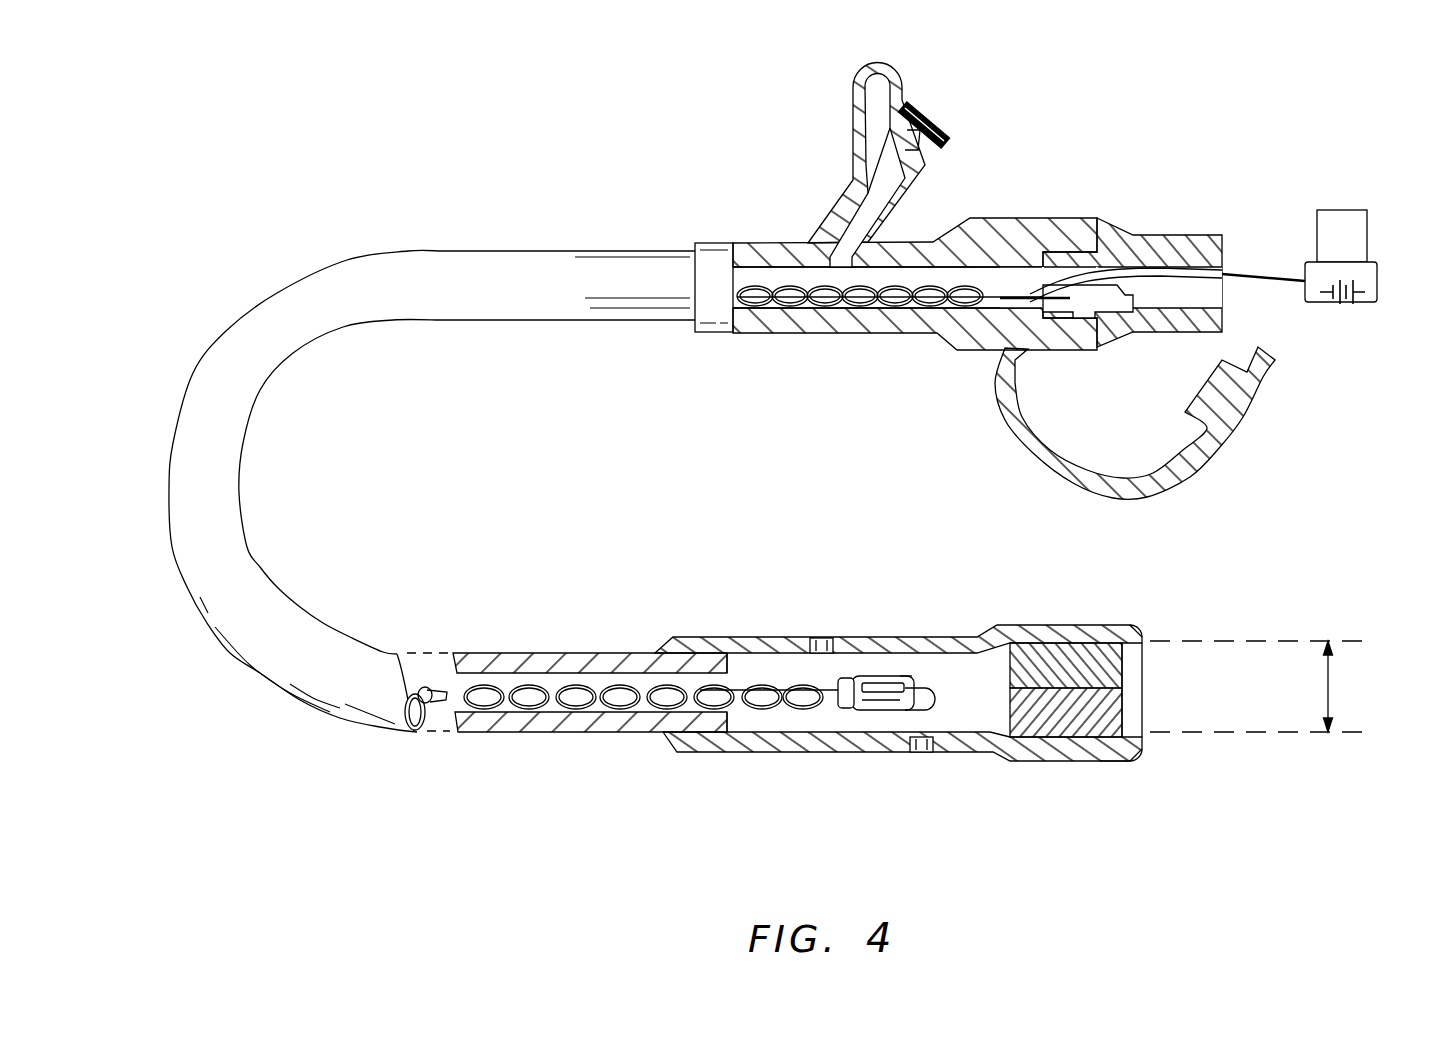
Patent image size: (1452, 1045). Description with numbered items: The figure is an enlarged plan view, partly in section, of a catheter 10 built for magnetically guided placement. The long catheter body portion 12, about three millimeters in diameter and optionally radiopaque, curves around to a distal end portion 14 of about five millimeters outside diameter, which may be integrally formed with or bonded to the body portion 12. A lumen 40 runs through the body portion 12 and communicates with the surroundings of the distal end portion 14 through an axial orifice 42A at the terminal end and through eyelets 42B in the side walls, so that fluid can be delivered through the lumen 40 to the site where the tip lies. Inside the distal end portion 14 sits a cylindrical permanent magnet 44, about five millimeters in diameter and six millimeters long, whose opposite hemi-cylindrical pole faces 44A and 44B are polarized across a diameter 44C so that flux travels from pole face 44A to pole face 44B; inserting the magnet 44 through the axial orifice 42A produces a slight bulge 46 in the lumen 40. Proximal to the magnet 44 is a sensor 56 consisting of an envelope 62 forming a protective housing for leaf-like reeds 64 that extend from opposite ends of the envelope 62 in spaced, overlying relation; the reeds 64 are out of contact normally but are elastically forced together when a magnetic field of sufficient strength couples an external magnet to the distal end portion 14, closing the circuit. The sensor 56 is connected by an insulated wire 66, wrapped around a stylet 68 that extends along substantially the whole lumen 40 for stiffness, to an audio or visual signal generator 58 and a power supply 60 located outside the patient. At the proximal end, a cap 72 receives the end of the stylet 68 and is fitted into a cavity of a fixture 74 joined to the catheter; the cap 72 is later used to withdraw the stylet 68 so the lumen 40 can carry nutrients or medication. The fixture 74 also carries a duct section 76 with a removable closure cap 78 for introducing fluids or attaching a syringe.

The catheter 10 is at (573, 247).
The catheter body portion 12 is at (527, 321).
The distal end portion 14 is at (720, 753).
The lumen 40 is at (525, 676).
The axial orifice 42A is at (1140, 661).
The eyelets 42B is at (820, 637).
The permanent magnet 44 is at (1094, 665).
The hemi-cylindrical pole face 44A is at (1095, 643).
The hemi-cylindrical pole face 44B is at (1128, 761).
The diameter 44C is at (1322, 680).
The bulge 46 is at (1090, 761).
The sensor 56 is at (905, 668).
The signal generator 58 is at (1365, 237).
The power supply 60 is at (1358, 302).
The envelope 62 is at (848, 710).
The leaf-like reeds 64 is at (870, 676).
The wire 66 is at (765, 692).
The stylet 68 is at (765, 690).
The cap 72 is at (1188, 235).
The fixture 74 is at (1044, 218).
The duct section 76 is at (915, 202).
The removable closure cap 78 is at (933, 102).